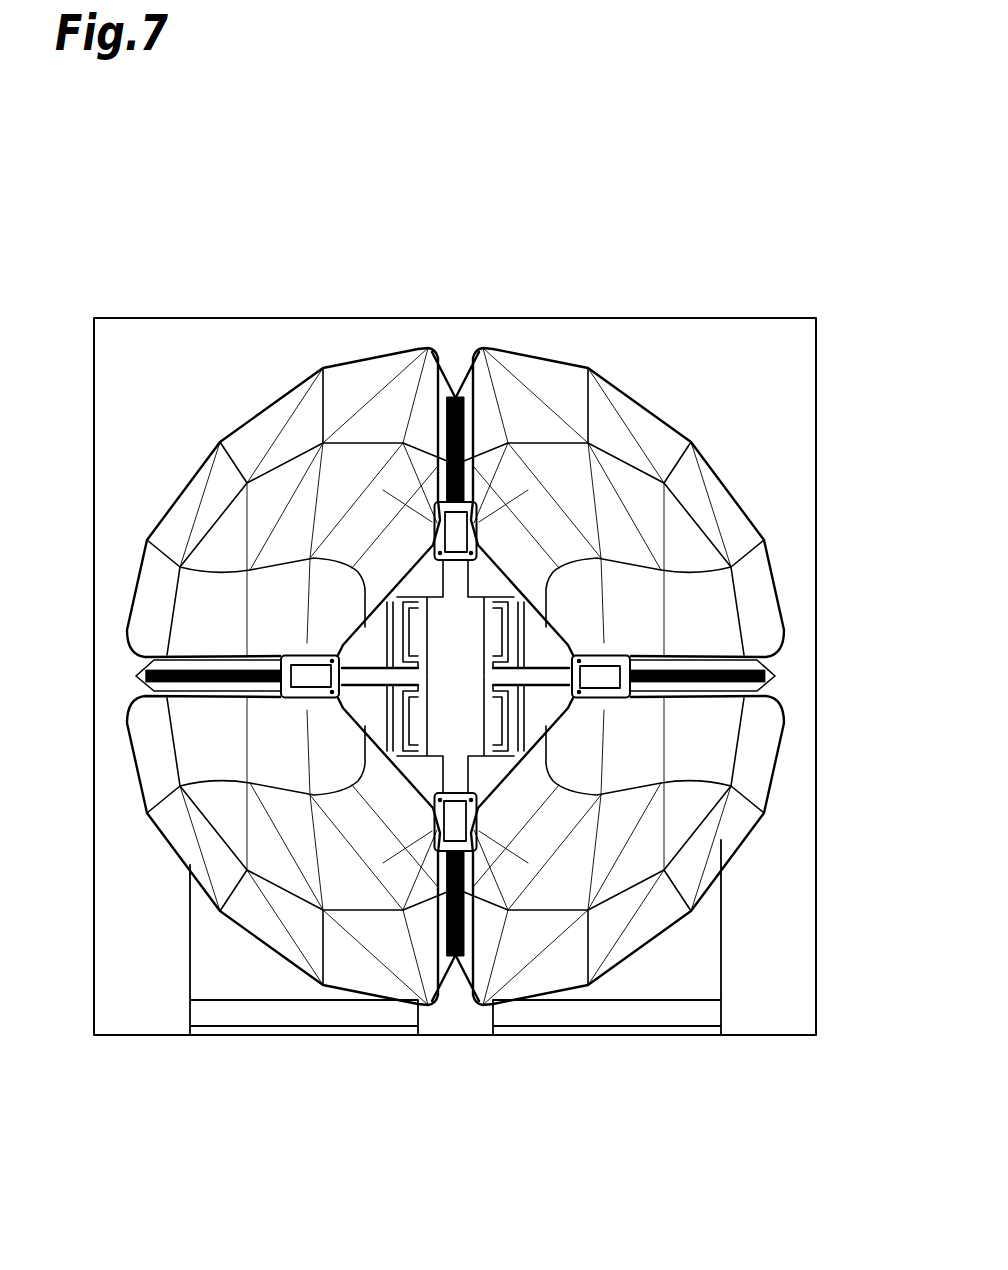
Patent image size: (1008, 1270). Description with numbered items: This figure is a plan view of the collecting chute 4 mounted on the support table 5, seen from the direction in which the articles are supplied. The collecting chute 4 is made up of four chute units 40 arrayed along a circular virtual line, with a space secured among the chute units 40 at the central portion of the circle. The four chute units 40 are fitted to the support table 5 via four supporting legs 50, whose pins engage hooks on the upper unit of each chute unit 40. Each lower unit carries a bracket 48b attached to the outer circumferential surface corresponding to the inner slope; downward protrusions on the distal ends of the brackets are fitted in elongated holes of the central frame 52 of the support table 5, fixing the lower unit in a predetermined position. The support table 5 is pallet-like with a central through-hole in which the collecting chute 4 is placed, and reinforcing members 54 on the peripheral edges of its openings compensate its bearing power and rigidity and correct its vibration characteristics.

The collecting chute 4 is at (468, 651).
The support table 5 is at (786, 390).
The chute unit 40 is at (250, 521).
The bracket 48b is at (290, 648).
The supporting leg 50 is at (411, 521).
The central frame 52 is at (459, 720).
The reinforcing member 54 is at (317, 1035).